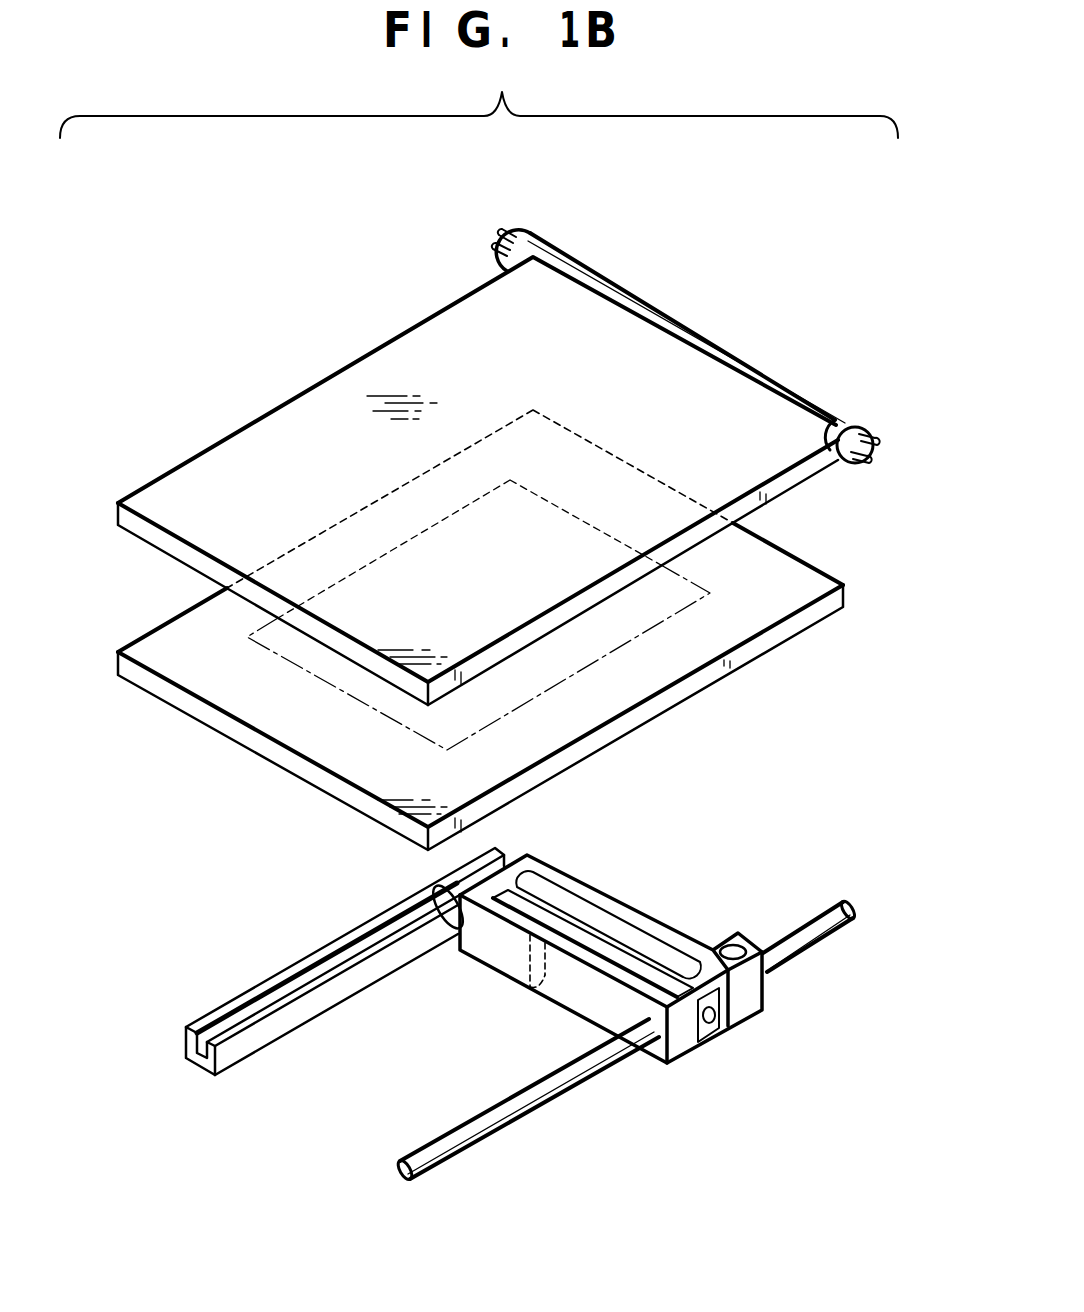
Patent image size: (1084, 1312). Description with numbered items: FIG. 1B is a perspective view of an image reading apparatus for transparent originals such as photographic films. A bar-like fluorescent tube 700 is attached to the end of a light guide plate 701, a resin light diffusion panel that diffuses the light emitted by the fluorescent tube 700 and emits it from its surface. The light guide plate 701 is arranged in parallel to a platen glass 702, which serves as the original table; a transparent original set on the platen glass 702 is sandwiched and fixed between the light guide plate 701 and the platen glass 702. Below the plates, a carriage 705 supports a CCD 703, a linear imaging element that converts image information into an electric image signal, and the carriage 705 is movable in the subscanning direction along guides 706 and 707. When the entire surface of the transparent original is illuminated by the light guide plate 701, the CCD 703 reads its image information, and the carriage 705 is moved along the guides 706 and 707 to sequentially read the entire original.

The fluorescent tube 700 is at (752, 374).
The light guide plate 701 is at (632, 338).
The platen glass 702 is at (680, 692).
The CCD 703 is at (525, 910).
The carriage 705 is at (552, 980).
The guide 706 is at (250, 1030).
The guide 707 is at (460, 1137).